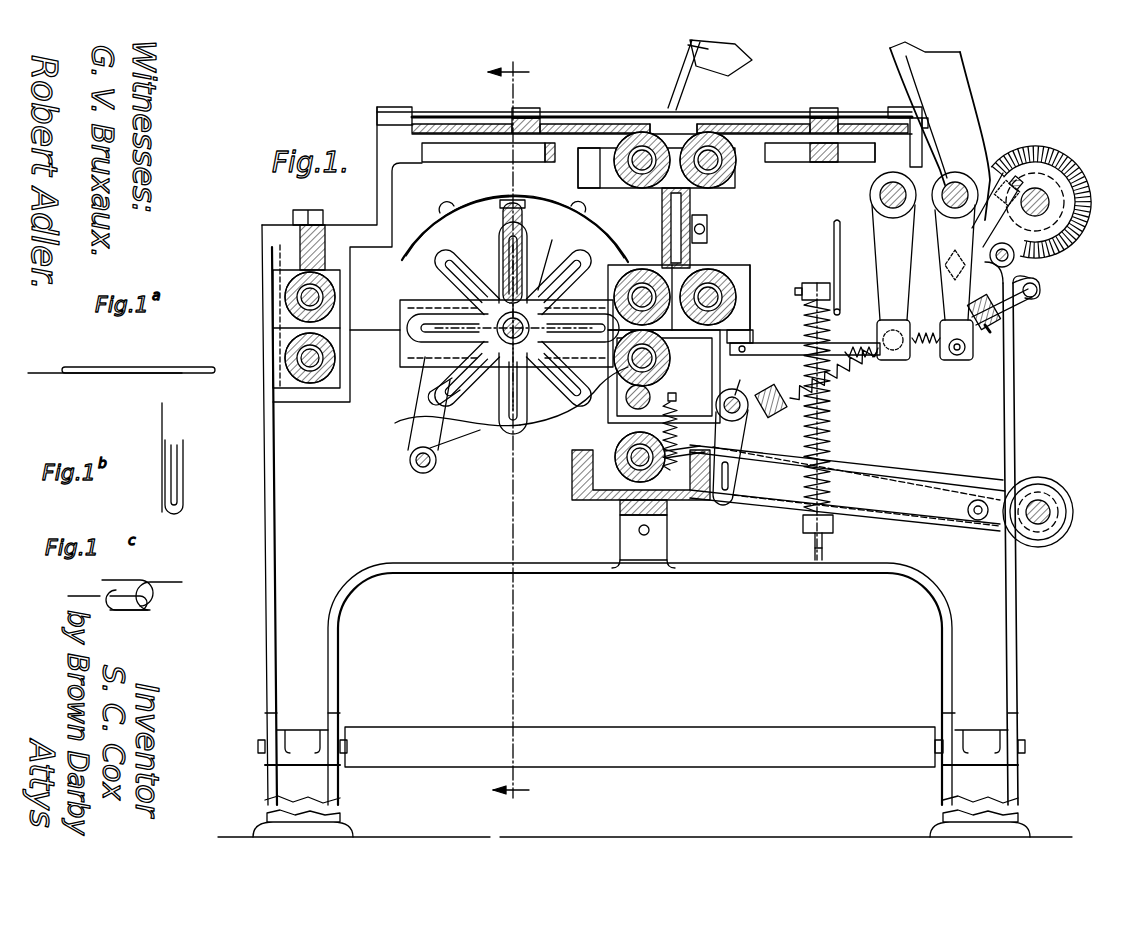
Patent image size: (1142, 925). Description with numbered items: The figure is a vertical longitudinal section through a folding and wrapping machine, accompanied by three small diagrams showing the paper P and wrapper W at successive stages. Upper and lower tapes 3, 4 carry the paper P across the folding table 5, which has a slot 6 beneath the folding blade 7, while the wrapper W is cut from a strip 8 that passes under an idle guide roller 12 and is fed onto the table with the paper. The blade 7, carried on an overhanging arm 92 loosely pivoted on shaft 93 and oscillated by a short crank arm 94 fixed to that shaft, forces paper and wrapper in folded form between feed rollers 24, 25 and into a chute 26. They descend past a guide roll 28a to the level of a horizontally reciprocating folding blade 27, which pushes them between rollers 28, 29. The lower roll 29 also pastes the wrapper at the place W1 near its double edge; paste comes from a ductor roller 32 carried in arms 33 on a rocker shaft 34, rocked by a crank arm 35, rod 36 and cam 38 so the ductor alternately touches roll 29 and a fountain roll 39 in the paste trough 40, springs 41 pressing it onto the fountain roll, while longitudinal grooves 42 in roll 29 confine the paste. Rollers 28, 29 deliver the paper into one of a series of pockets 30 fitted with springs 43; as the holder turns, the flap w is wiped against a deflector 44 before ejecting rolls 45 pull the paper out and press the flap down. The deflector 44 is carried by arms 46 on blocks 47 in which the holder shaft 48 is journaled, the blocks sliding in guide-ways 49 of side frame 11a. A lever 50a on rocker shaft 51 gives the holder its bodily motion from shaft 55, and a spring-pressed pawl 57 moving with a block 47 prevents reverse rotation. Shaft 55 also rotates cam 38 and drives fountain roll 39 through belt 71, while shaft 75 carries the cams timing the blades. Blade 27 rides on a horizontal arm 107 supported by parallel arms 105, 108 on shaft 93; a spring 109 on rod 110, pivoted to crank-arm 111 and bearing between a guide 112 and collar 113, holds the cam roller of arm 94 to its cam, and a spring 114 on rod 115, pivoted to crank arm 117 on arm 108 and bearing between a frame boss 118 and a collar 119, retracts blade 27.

In FIG. 1, the upper tapes 3 is at (512, 118).
In FIG. 1, the lower tapes 4 is at (540, 145).
In FIG. 1, the folding table 5 is at (580, 124).
In FIG. 1, the slot 6 is at (655, 124).
In FIG. 1, the folding blade 7 is at (718, 80).
In FIG. 1, the strip 8 is at (300, 255).
In FIG. 1, the side frame 11a is at (345, 705).
In FIG. 1, the idle guide roller 12 is at (776, 742).
In FIG. 1, the feed roller 24 is at (633, 180).
In FIG. 1, the feed roller 25 is at (725, 168).
In FIG. 1, the guide or chute 26 is at (692, 200).
In FIG. 1, the horizontally operated folding blade 27 is at (752, 330).
In FIG. 1, the roller 28 is at (640, 268).
In FIG. 1, the guide roll 28a is at (712, 268).
In FIG. 1, the lower roll 29 is at (595, 405).
In FIG. 1, the pockets or clamps 30 is at (395, 415).
In FIG. 1, the ductor or feed roller 32 is at (615, 430).
In FIG. 1, the arms 33 is at (690, 398).
In FIG. 1, the rocker shaft 34 is at (735, 400).
In FIG. 1, the crank arm 35 is at (742, 438).
In FIG. 1, the rod 36 is at (930, 520).
In FIG. 1, the cam 38 is at (1010, 490).
In FIG. 1, the fountain roll 39 is at (585, 470).
In FIG. 1, the paste fountain or trough 40 is at (672, 505).
In FIG. 1, the springs 41 is at (678, 420).
In FIG. 1, the longitudinal grooves 42 is at (662, 372).
In FIG. 1, the springs 43 is at (508, 215).
In FIG. 1, the deflector 44 is at (470, 235).
In FIG. 1, the receiving or ejecting rolls 45 is at (292, 355).
In FIG. 1, the arms 46 is at (572, 208).
In FIG. 1, the blocks 47 is at (420, 430).
In FIG. 1, the shaft 48 is at (500, 440).
In FIG. 1, the guide-ways 49 is at (430, 380).
In FIG. 1, the lever 50a is at (410, 462).
In FIG. 1, the rocker shaft 51 is at (390, 500).
In FIG. 1, the shaft 55 is at (1060, 503).
In FIG. 1, the spring pressed dog or pawl 57 is at (978, 500).
In FIG. 1, the belt 71 is at (895, 476).
In FIG. 1, the shaft 75 is at (1040, 190).
In FIG. 1, the overhanging arm 92 is at (955, 80).
In FIG. 1, the shaft 93 is at (957, 185).
In FIG. 1, the short crank arm 94 is at (1000, 215).
In FIG. 1, the arm 105 is at (945, 262).
In FIG. 1, the horizontal arm 107 is at (950, 362).
In FIG. 1, the arm 108 is at (893, 246).
In FIG. 1, the spring 109 is at (890, 362).
In FIG. 1, the rod 110 is at (1032, 300).
In FIG. 1, the crank-arm 111 is at (1020, 258).
In FIG. 1, the guide 112 is at (780, 481).
In FIG. 1, the collar 113 is at (995, 325).
In FIG. 1, the spring 114 is at (824, 436).
In FIG. 1, the rod 115 is at (815, 555).
In FIG. 1, the crank arm 117 is at (836, 220).
In FIG. 1, the boss 118 is at (836, 528).
In FIG. 1, the collar 119 is at (826, 284).
In FIG. 1, the flap w is at (551, 258).
In FIG. 1A, the paper P is at (128, 366).
In FIG. 1B, the paper P is at (185, 443).
In FIG. 1C, the paper P is at (116, 610).
In FIG. 1A, the wrapper W is at (35, 372).
In FIG. 1B, the wrapper W is at (160, 415).
In FIG. 1C, the wrapper W is at (124, 584).
In FIG. 1C, the paste area W1 is at (140, 606).